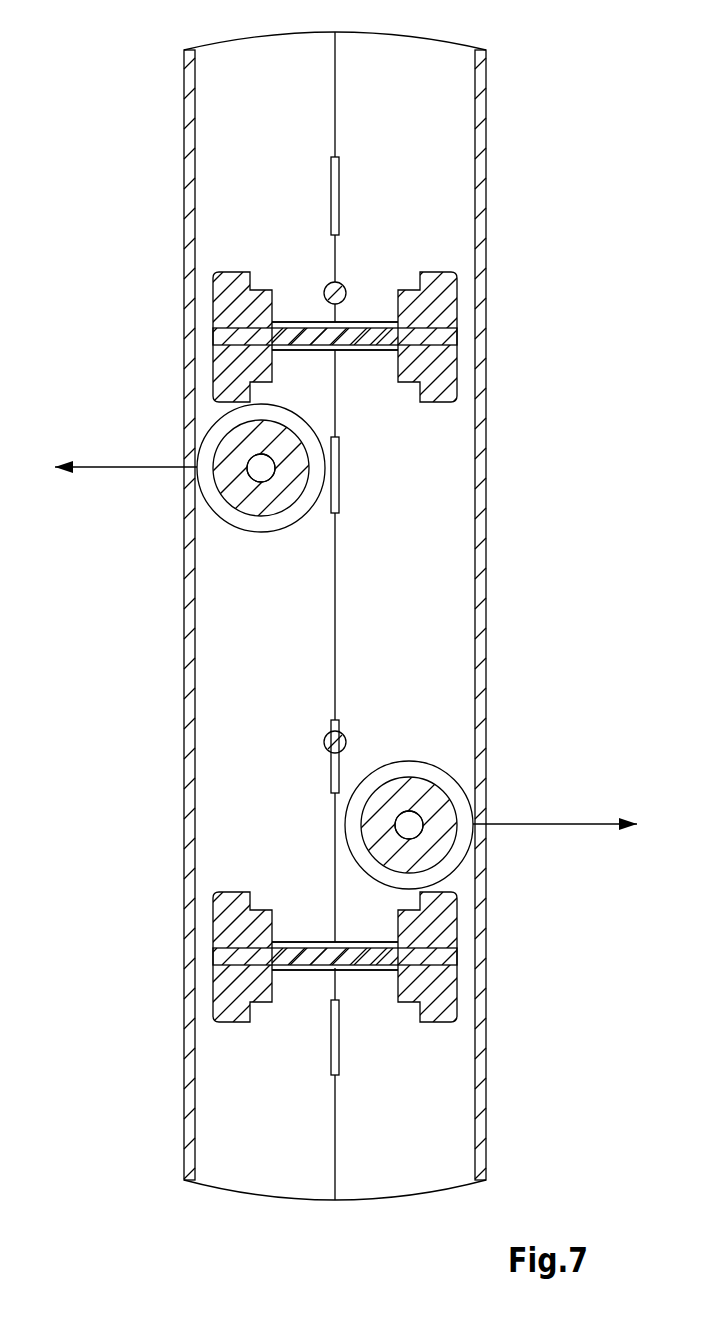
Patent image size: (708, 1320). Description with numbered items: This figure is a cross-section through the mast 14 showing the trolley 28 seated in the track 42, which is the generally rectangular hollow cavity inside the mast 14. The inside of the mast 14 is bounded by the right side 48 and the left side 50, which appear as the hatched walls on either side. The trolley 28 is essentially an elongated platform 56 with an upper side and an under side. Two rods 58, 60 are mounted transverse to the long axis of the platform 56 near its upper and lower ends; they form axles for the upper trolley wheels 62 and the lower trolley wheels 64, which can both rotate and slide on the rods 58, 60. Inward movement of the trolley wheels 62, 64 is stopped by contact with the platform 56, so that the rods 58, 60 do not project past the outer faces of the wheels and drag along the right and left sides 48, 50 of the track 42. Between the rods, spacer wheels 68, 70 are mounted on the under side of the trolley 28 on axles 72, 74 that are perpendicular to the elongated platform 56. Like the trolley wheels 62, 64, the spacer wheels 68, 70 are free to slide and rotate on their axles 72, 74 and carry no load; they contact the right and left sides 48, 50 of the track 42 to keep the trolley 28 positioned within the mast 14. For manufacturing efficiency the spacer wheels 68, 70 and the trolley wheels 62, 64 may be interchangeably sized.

The mast 14 is at (487, 530).
The trolley 28 is at (425, 615).
The track 42 is at (420, 92).
The right side 48 is at (183, 747).
The left side 50 is at (487, 678).
The elongated platform 56 is at (237, 667).
The rod 58 is at (366, 351).
The rod 60 is at (308, 969).
The upper trolley wheels 62 is at (250, 272).
The lower trolley wheels 64 is at (403, 905).
The spacer wheel 68 is at (209, 427).
The spacer wheel 70 is at (457, 765).
The axle 72 is at (249, 478).
The axle 74 is at (421, 815).